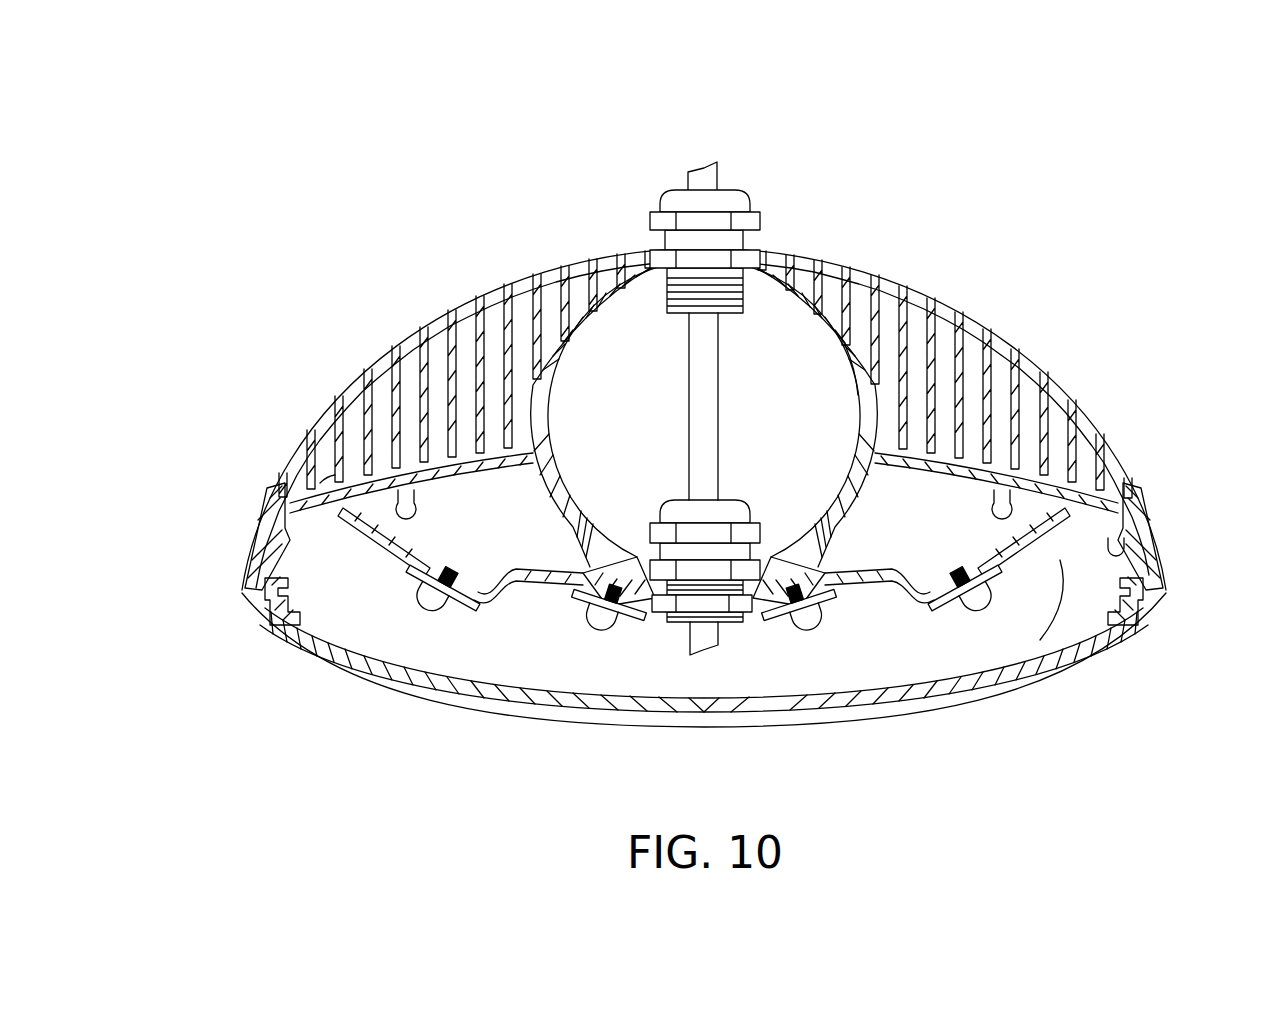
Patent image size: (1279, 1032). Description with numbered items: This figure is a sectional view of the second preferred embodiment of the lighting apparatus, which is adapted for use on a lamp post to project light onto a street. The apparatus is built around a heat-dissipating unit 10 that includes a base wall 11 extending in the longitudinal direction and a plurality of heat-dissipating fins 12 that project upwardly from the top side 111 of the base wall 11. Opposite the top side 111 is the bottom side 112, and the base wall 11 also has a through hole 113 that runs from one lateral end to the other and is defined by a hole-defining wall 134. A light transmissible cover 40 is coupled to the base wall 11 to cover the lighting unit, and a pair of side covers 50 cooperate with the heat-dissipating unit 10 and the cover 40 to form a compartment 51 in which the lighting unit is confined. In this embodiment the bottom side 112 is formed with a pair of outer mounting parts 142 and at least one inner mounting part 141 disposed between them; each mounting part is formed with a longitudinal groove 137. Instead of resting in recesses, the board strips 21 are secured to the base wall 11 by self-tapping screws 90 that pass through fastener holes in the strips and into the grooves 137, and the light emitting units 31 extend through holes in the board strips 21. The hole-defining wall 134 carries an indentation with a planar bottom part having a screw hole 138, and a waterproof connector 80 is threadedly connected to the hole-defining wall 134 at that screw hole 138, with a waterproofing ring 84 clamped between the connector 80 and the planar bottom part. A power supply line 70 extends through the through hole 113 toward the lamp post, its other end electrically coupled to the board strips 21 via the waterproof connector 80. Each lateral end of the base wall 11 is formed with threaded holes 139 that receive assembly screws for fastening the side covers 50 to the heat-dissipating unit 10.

The heat-dissipating unit 10 is at (260, 514).
The base wall 11 is at (250, 547).
The heat-dissipating fins 12 is at (932, 332).
The board strips 21 is at (786, 620).
The light emitting units 31 is at (428, 600).
The light transmissible cover 40 is at (301, 642).
The side covers 50 is at (494, 302).
The compartment 51 is at (330, 624).
The power supply line 70 is at (705, 178).
The waterproof connector 80 is at (656, 221).
The waterproofing ring 84 is at (690, 565).
The self-tapping screws 90 is at (452, 566).
The top side 111 is at (330, 470).
The bottom side 112 is at (378, 548).
The through hole 113 is at (781, 330).
The hole-defining wall 134 is at (823, 368).
The groove 137 is at (458, 615).
The screw hole 138 is at (750, 605).
The threaded holes 139 is at (1122, 546).
The inner mounting part 141 is at (556, 625).
The outer mounting parts 142 is at (1012, 632).